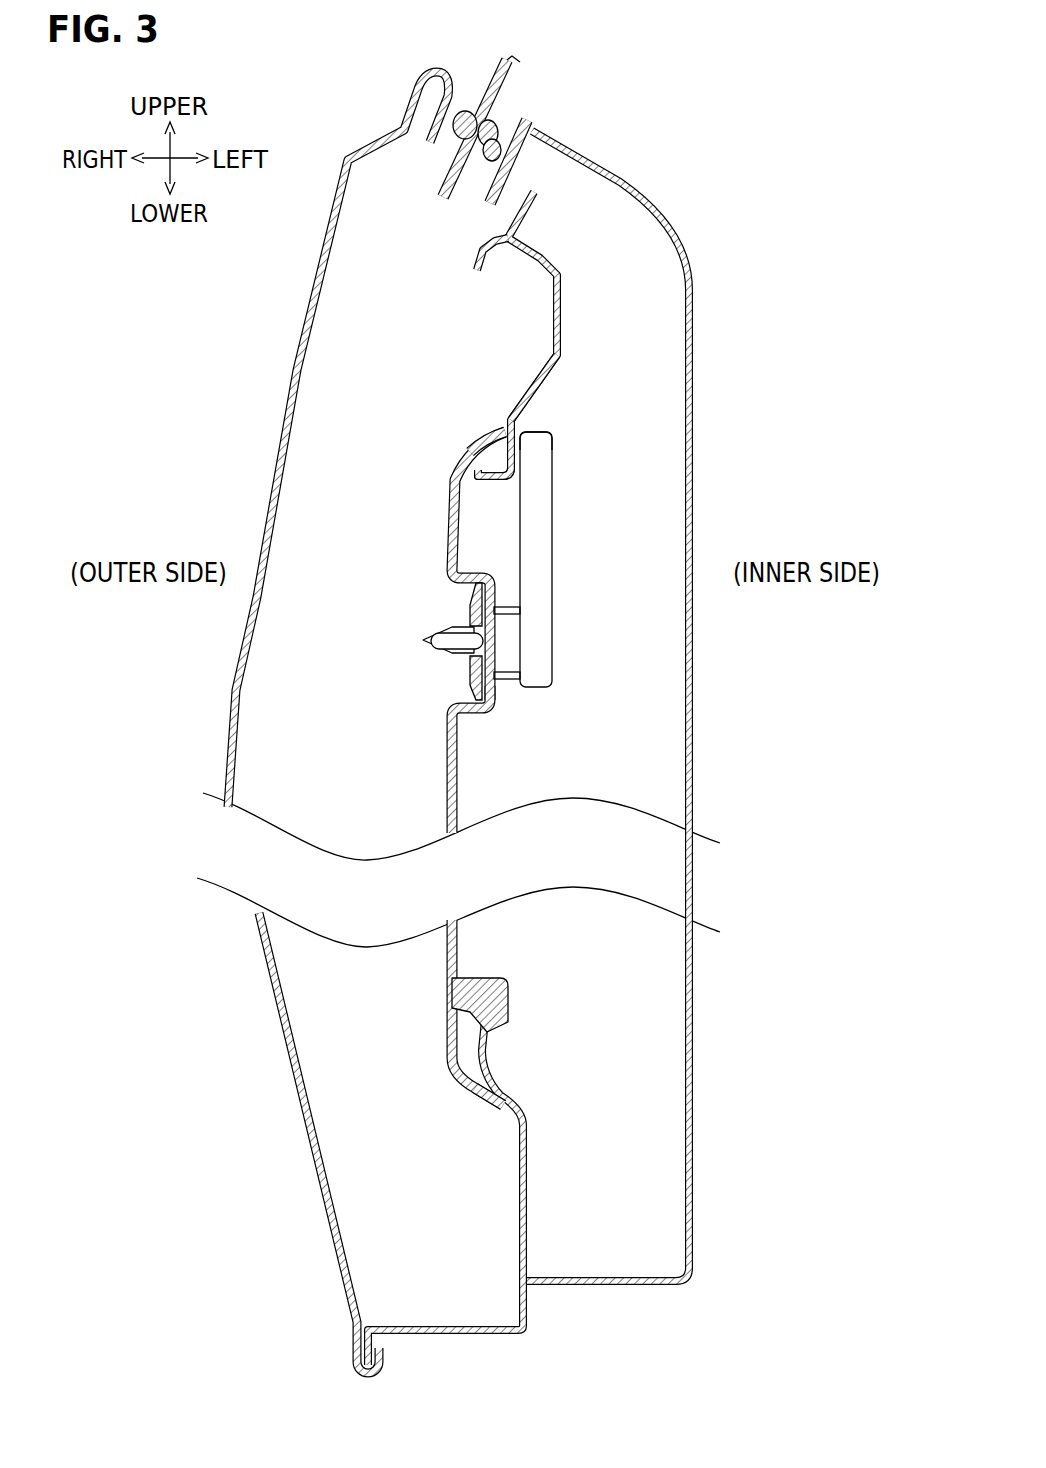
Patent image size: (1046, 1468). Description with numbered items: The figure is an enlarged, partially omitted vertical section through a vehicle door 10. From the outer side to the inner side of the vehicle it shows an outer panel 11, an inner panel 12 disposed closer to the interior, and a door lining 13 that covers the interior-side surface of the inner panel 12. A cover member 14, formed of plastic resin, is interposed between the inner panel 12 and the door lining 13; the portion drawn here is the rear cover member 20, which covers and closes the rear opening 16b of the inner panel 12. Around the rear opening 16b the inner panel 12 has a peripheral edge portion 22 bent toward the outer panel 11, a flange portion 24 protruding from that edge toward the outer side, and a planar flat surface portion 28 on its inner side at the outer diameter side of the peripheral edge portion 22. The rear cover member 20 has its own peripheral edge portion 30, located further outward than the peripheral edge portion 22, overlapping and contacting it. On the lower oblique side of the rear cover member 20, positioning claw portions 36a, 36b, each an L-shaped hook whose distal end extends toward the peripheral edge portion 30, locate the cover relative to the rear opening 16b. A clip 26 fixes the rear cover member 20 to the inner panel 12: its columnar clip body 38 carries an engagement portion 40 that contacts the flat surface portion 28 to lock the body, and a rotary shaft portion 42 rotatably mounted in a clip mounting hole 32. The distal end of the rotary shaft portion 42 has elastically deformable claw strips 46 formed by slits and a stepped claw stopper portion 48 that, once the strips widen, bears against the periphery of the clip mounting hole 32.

The vehicle door 10 is at (618, 140).
The outer panel 11 is at (272, 416).
The inner panel 12 is at (503, 778).
The door lining 13 is at (702, 450).
The cover member 14 is at (485, 772).
The rear opening 16b is at (468, 793).
The rear cover member 20 is at (485, 772).
The peripheral edge portion 22 is at (484, 487).
The flange portion 24 is at (478, 480).
The clip 26 is at (560, 550).
The flat surface portion 28 is at (520, 417).
The peripheral edge portion 30 is at (505, 433).
The clip mounting hole 32 is at (495, 648).
The positioning claw portion 36a is at (556, 1005).
The positioning claw portion 36b is at (510, 1012).
The clip body 38 is at (549, 559).
The engagement portion 40 is at (530, 433).
The rotary shaft portion 42 is at (510, 724).
The claw strips 46 is at (438, 640).
The claw stopper portion 48 is at (470, 612).